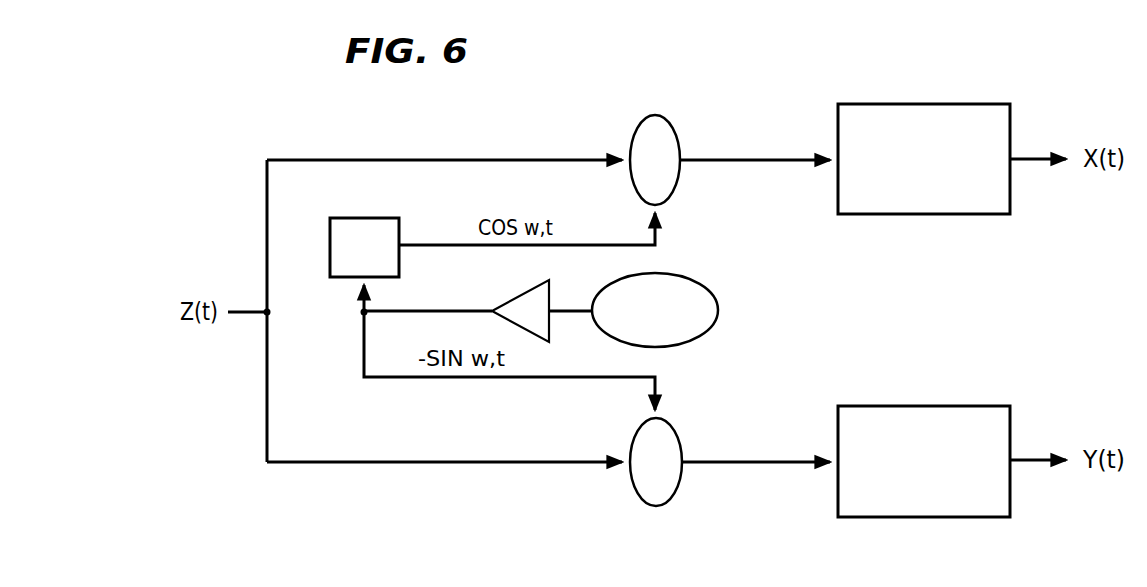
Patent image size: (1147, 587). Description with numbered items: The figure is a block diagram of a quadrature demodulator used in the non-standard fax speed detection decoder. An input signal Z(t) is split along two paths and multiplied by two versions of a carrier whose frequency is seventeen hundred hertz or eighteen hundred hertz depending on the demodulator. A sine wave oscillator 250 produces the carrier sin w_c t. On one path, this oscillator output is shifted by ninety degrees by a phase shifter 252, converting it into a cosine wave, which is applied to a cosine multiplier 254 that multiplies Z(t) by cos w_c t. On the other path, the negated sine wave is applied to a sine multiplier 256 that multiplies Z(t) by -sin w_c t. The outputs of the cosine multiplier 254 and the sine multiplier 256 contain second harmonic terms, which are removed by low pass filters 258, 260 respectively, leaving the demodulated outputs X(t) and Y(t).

The sine wave oscillator 250 is at (713, 292).
The phase shifter 252 is at (362, 218).
The cosine multiplier 254 is at (641, 119).
The sine multiplier 256 is at (633, 443).
The low pass filter 258 is at (867, 104).
The low pass filter 260 is at (888, 406).